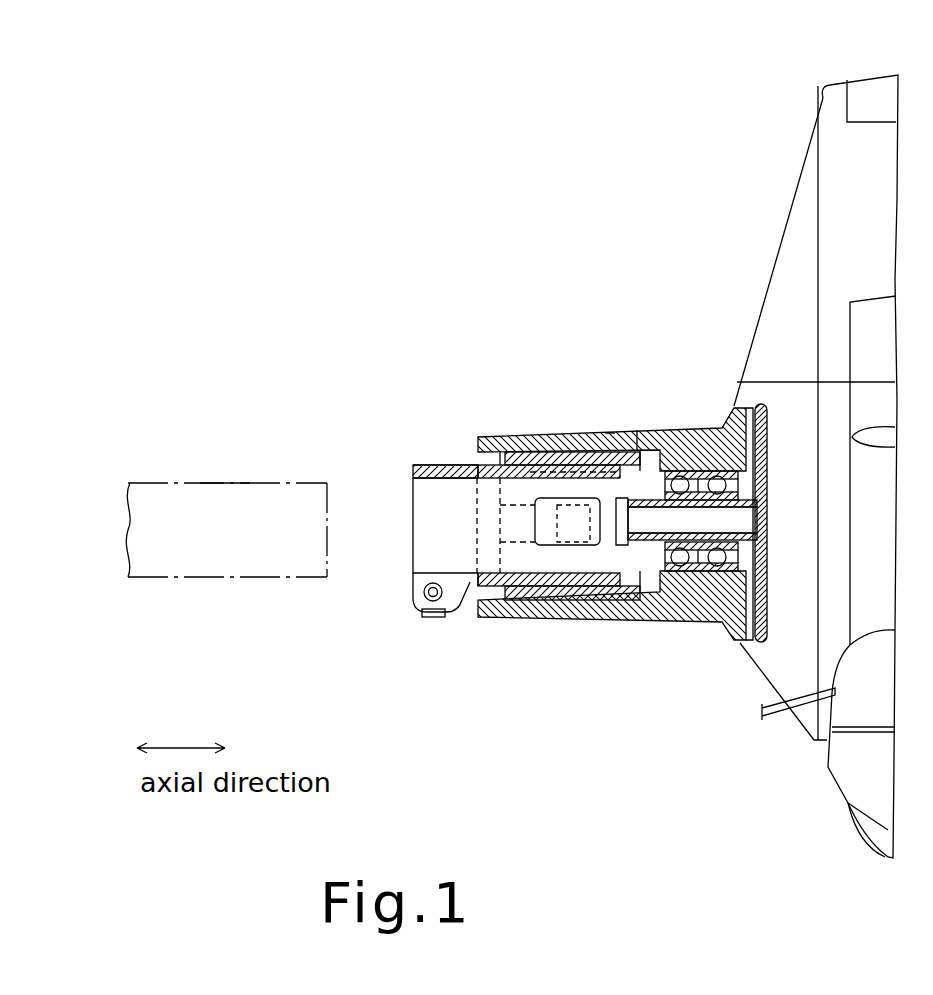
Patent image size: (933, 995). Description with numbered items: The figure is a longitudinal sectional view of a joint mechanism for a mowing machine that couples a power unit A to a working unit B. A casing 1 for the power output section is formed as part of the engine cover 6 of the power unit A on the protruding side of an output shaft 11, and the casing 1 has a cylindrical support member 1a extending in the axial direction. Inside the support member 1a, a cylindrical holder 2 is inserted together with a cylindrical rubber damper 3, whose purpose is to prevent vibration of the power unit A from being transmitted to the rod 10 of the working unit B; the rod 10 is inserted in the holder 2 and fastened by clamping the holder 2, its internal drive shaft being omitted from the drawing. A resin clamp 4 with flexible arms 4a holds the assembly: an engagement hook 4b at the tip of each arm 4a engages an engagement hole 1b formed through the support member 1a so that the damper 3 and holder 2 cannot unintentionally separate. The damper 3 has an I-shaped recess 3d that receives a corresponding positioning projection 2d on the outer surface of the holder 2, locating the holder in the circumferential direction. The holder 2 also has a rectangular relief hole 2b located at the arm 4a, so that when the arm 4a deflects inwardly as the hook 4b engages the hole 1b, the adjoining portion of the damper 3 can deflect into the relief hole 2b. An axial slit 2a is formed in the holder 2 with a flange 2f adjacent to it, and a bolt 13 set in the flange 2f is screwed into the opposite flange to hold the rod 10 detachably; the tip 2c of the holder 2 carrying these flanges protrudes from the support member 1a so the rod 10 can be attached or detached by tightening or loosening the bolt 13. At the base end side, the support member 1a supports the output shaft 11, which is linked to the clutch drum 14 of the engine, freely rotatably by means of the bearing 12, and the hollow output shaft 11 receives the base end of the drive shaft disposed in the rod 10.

The casing 1 is at (738, 400).
The support member 1a is at (640, 430).
The engagement hole 1b is at (610, 433).
The holder 2 is at (419, 465).
The slit 2a is at (462, 585).
The relief hole 2b is at (547, 547).
The tip of the holder 2c is at (434, 465).
The positioning projection 2d is at (540, 477).
The flange 2f is at (410, 582).
The damper 3 is at (528, 437).
The recess 3d is at (568, 437).
The clamp 4 is at (475, 457).
The arm 4a is at (520, 548).
The engagement hook 4b is at (592, 548).
The engine cover 6 is at (808, 142).
The rod 10 is at (225, 577).
The output shaft 11 is at (674, 552).
The bearing 12 is at (714, 562).
The bolt 13 is at (412, 607).
The clutch drum 14 is at (750, 642).
The power unit A is at (843, 74).
The working unit B is at (158, 583).